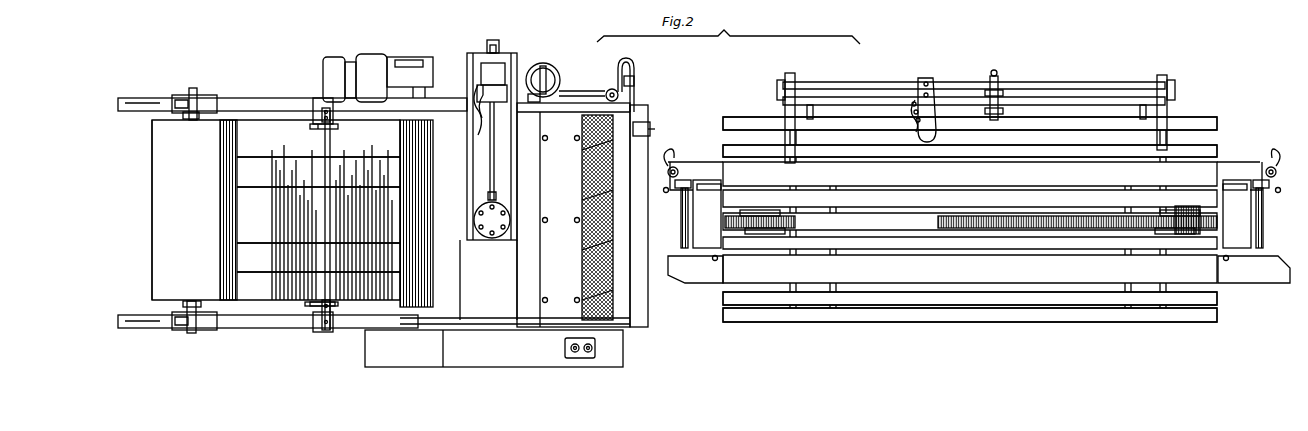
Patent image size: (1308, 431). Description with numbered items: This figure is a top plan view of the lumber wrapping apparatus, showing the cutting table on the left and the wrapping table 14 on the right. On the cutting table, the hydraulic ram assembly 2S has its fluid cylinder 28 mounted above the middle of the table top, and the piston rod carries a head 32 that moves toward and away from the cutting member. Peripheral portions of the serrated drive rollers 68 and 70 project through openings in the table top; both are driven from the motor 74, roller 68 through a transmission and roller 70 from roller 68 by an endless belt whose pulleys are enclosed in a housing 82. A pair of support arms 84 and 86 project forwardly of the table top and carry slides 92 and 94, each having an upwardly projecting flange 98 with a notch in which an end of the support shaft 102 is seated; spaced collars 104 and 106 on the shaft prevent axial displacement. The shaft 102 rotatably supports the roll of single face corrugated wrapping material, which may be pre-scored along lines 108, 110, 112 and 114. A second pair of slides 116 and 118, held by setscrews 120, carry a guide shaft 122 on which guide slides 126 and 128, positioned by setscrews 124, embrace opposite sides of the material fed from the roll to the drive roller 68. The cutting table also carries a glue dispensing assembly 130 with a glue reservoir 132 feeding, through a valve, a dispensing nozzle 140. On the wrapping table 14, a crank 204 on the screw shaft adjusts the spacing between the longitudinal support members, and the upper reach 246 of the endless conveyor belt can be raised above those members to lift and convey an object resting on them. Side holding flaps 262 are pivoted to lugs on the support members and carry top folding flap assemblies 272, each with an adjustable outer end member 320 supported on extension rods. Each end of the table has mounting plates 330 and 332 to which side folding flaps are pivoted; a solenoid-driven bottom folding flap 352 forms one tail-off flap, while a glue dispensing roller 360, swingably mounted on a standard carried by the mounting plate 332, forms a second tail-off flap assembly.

The wrapping table 14 is at (1114, 328).
The cylinder assembly 2S is at (514, 45).
The fluid cylinder 28 is at (510, 216).
The head 32 is at (488, 280).
The serrated drive roller 68 is at (437, 278).
The serrated drive roller 70 is at (582, 268).
The motor 74 is at (376, 60).
The housing 82 is at (423, 367).
The support arm 84 is at (268, 325).
The support arm 86 is at (250, 104).
The slide 92 is at (210, 328).
The slide 94 is at (211, 100).
The upwardly projecting flange 98 is at (180, 100).
The support shaft 102 is at (185, 312).
The collar 104 is at (192, 92).
The collar 106 is at (190, 118).
The pre-scored line 108 is at (255, 157).
The pre-scored line 110 is at (244, 187).
The pre-scored line 112 is at (242, 243).
The pre-scored line 114 is at (242, 272).
The slide 116 is at (320, 334).
The slide 118 is at (318, 98).
The setscrew 120 is at (329, 106).
The guide shaft 122 is at (326, 218).
The setscrew 124 is at (329, 122).
The guide slide 126 is at (317, 302).
The guide slide 128 is at (319, 127).
The glue dispensing assembly 130 is at (612, 82).
The glue reservoir 132 is at (557, 76).
The dispensing nozzle 140 is at (651, 127).
The crank 204 is at (1001, 82).
The upper reach 246 is at (940, 230).
The side holding flap 262 is at (1182, 172).
The top folding flap assembly 272 is at (1032, 140).
The adjustable outer end member 320 is at (1094, 122).
The mounting plate 330 is at (700, 278).
The mounting plate 332 is at (692, 165).
The bottom folding flap 352 is at (695, 232).
The glue dispensing roller 360 is at (682, 222).